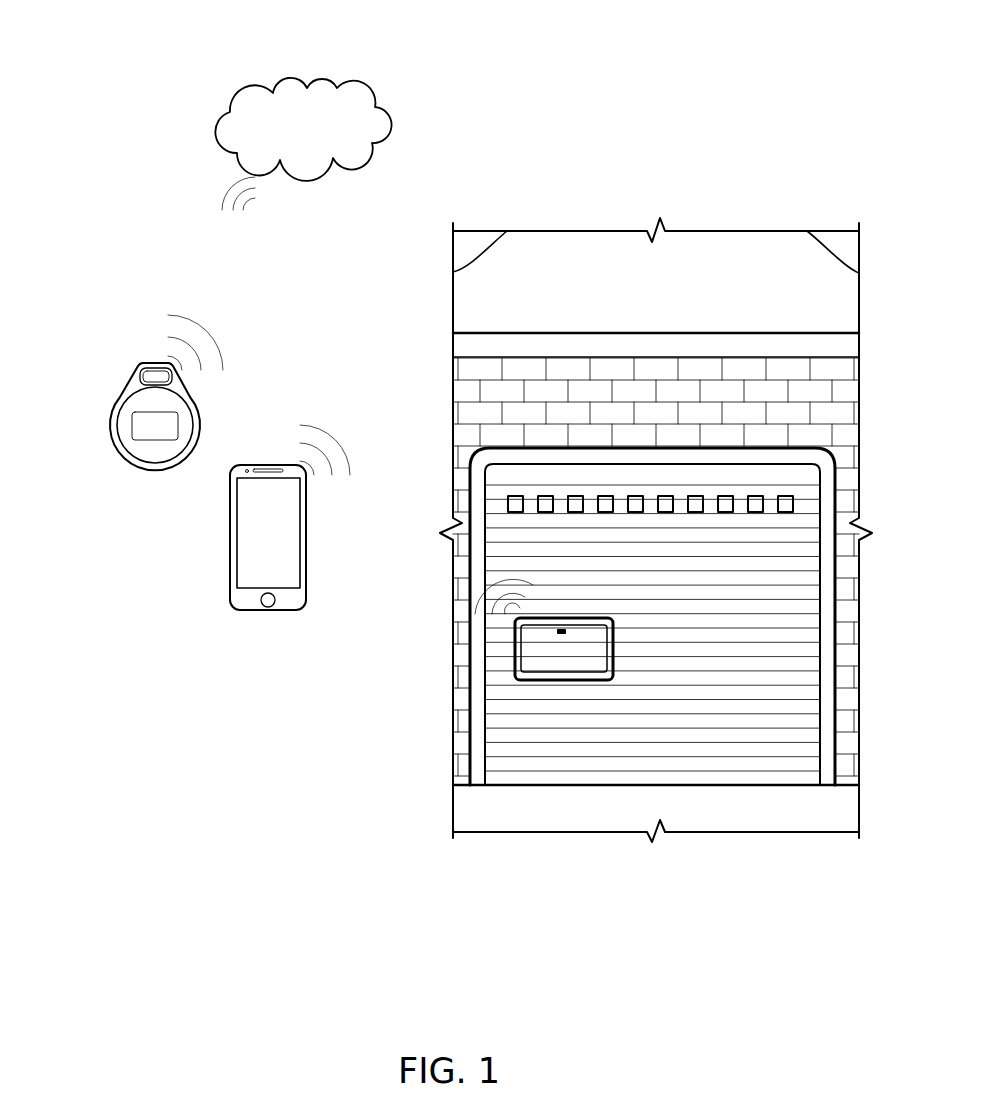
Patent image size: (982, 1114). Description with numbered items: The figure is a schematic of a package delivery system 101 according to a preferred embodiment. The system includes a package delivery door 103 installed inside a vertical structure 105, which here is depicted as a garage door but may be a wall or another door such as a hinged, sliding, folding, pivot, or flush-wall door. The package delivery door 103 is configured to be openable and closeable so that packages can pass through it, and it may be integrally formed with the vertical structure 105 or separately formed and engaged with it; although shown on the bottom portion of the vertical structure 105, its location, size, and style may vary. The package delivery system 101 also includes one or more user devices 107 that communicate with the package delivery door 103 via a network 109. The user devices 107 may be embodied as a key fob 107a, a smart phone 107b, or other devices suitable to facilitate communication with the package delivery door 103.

The package delivery system 101 is at (170, 53).
The package delivery door 103 is at (515, 646).
The vertical structure 105 is at (802, 562).
The user devices 107 is at (88, 280).
The key fob 107a is at (130, 378).
The smart phone 107b is at (306, 548).
The network 109 is at (398, 127).